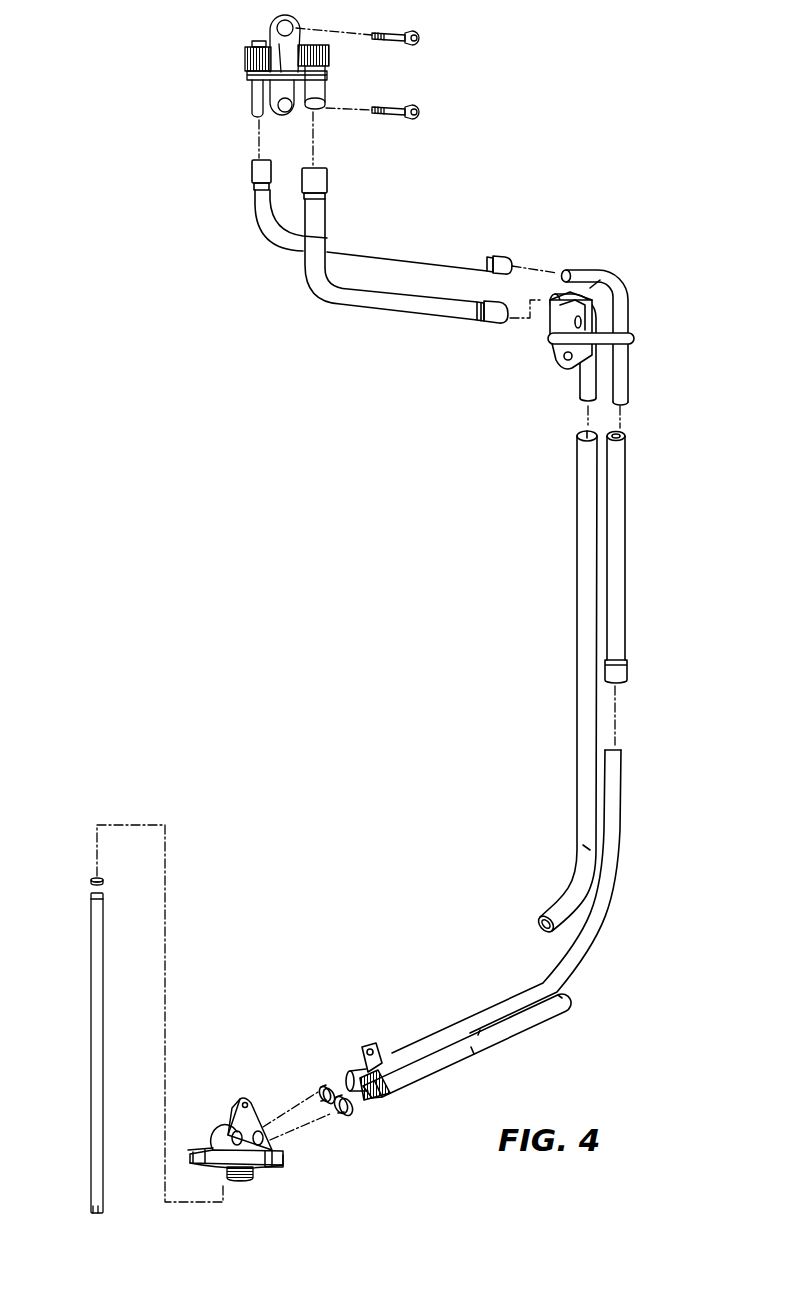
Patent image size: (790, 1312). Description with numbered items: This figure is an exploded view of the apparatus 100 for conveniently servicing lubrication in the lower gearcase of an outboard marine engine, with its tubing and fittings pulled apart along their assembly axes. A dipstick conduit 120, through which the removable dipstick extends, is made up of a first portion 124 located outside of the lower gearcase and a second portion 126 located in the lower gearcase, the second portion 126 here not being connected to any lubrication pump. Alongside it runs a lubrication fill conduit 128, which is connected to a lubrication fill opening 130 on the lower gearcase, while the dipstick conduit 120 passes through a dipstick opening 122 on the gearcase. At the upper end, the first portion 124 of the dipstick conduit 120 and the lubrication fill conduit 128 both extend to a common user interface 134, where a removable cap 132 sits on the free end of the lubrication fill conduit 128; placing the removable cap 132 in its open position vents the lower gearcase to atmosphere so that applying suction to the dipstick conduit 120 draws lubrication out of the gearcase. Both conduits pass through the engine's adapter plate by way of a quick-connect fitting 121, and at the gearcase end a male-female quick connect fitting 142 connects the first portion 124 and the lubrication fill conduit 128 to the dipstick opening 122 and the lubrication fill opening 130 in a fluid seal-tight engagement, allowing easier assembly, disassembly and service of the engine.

The apparatus 100 is at (660, 226).
The dipstick conduit 120 is at (270, 238).
The quick-connect fitting 121 is at (544, 367).
The dipstick opening 122 is at (249, 1128).
The first portion 124 is at (612, 838).
The second portion 126 is at (91, 1064).
The lubrication fill conduit 128 is at (575, 683).
The lubrication fill opening 130 is at (272, 1140).
The removable cap 132 is at (330, 53).
The common user interface 134 is at (239, 78).
The male-female quick connect fitting 142 is at (249, 1195).